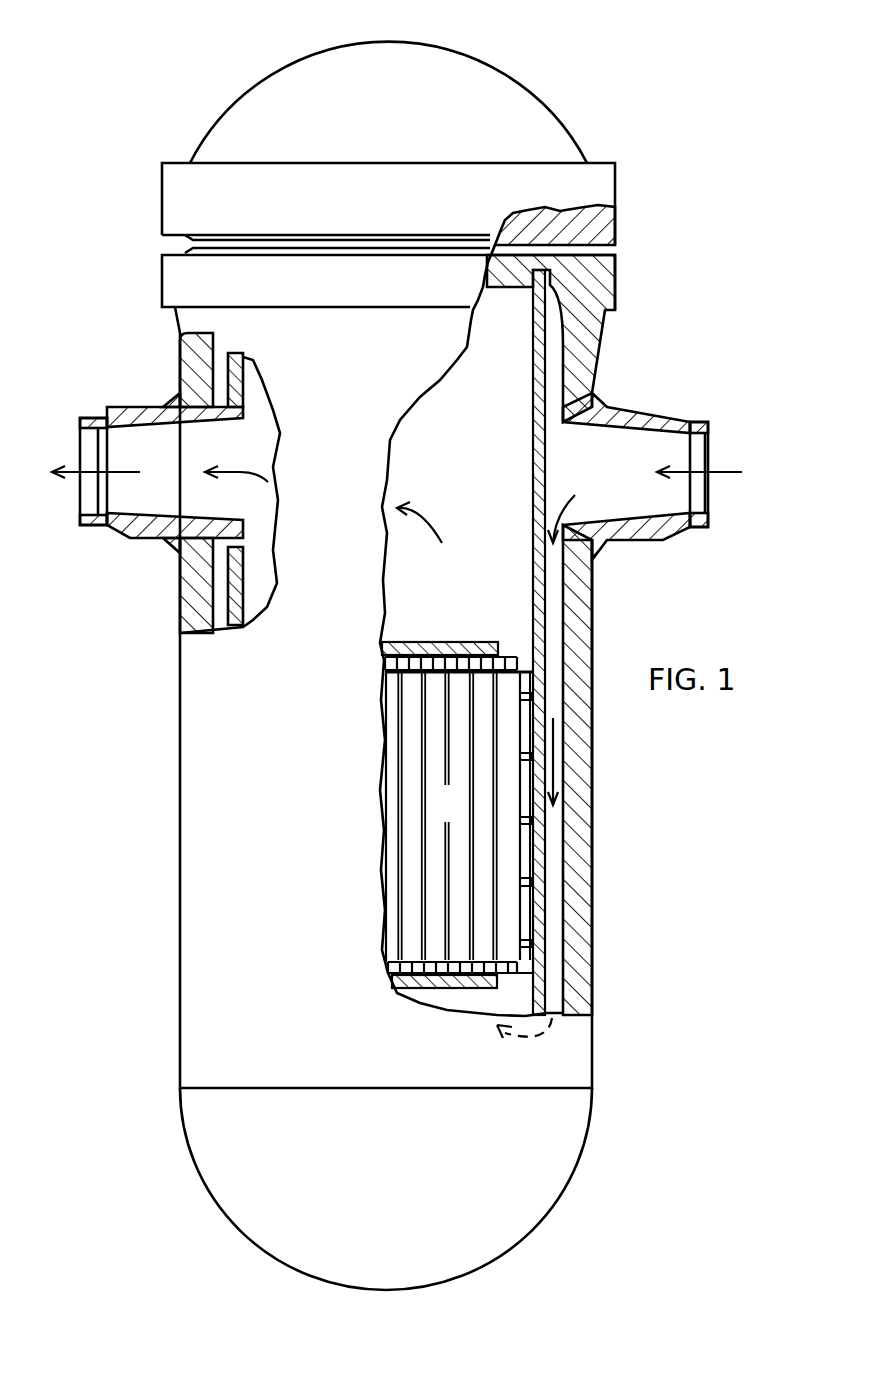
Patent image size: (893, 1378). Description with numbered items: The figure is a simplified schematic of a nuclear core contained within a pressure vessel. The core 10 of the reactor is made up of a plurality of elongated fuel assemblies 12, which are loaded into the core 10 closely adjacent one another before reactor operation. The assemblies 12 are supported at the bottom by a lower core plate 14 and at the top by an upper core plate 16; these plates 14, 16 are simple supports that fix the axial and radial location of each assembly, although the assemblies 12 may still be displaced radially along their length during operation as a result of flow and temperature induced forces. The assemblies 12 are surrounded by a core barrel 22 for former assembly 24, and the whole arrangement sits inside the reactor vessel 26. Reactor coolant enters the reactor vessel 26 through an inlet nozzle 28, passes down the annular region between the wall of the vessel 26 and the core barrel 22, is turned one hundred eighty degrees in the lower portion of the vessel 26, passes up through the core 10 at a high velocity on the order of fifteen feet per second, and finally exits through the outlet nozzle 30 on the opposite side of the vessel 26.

The core 10 is at (460, 817).
The fuel assemblies 12 is at (433, 708).
The lower core plate 14 is at (397, 988).
The upper core plate 16 is at (420, 642).
The core barrel 22 is at (535, 607).
The former assembly 24 is at (527, 880).
The reactor vessel 26 is at (587, 363).
The inlet nozzle 28 is at (667, 407).
The outlet nozzle 30 is at (118, 407).